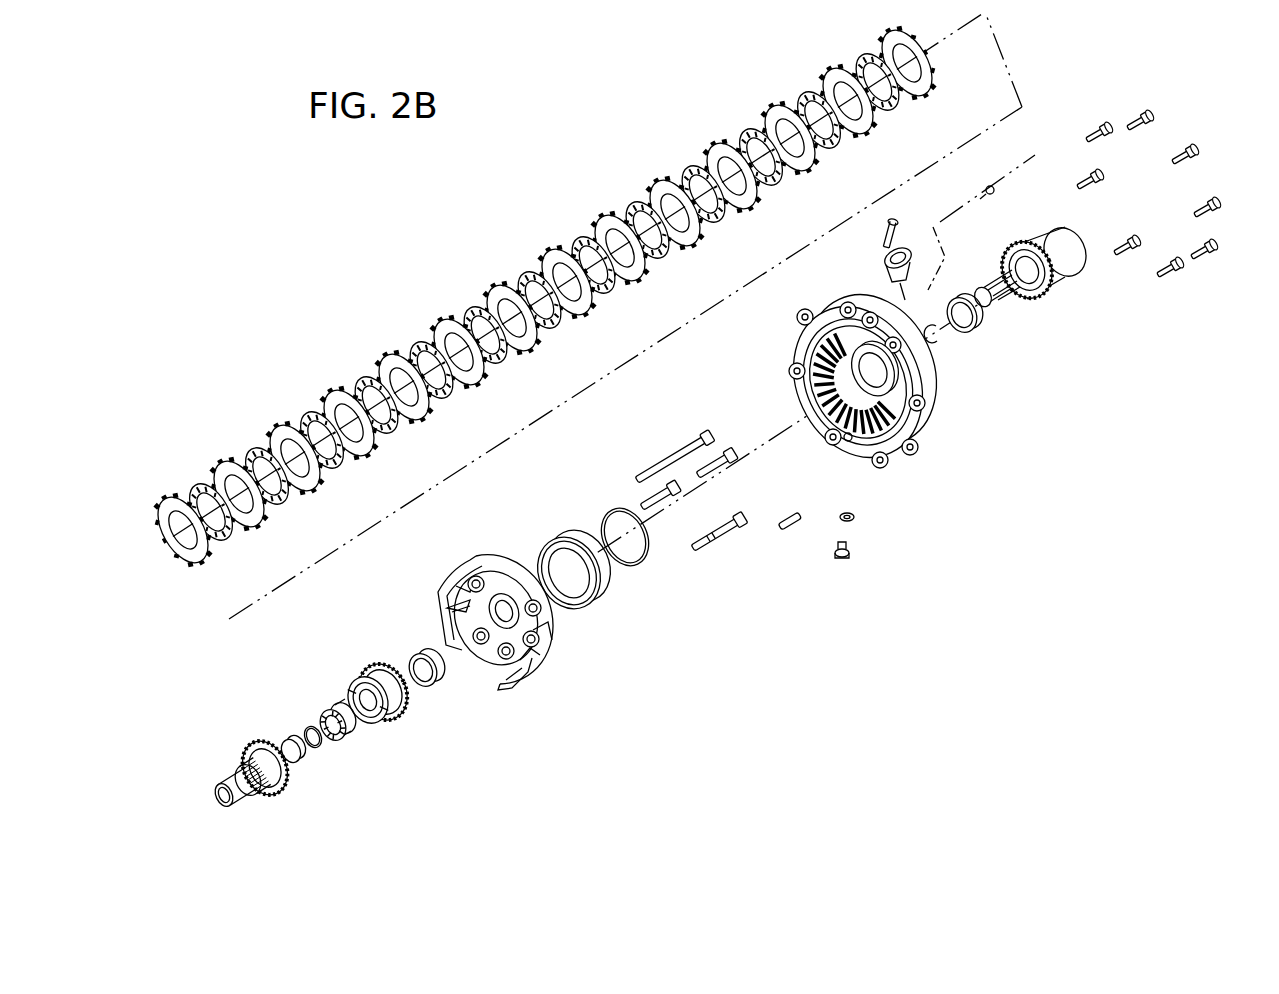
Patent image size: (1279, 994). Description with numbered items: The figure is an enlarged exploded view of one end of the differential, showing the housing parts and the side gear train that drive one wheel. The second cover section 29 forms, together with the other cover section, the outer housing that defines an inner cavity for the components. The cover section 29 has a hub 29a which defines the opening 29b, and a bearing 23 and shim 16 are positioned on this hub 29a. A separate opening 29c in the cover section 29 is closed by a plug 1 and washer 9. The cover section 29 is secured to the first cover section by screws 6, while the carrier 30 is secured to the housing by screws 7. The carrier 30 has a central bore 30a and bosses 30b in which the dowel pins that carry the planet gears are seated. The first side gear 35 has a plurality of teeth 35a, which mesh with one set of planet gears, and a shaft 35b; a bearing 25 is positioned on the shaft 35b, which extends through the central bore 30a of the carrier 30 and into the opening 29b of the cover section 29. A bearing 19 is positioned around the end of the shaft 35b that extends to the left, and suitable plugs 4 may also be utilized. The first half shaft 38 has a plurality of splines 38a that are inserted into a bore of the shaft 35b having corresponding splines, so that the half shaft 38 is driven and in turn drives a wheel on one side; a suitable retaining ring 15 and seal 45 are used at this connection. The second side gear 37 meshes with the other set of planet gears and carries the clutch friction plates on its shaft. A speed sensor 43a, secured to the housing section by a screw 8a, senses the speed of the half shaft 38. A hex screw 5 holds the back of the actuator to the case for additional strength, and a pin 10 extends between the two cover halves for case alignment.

The plug 1 is at (852, 556).
The plugs 4 is at (316, 749).
The hex screw 5 is at (994, 184).
The screws 6 is at (1178, 150).
The screws 7 is at (709, 553).
The screw 8a is at (886, 233).
The washer 9 is at (857, 519).
The pin 10 is at (791, 536).
The retaining ring 15 is at (930, 328).
The shim 16 is at (647, 566).
The bearing 19 is at (347, 740).
The bearing 23 is at (590, 602).
The bearing 25 is at (442, 682).
The second cover section 29 is at (928, 465).
The hub 29a is at (895, 372).
The opening 29b is at (840, 380).
The opening 29c is at (843, 440).
The carrier 30 is at (528, 684).
The central bore 30a is at (505, 594).
The bosses 30b is at (548, 636).
The first side gear 35 is at (398, 722).
The teeth 35a is at (356, 678).
The shaft 35b is at (386, 666).
The second side gear 37 is at (248, 812).
The first half shaft 38 is at (1053, 293).
The splines 38a is at (990, 287).
The speed sensor 43a is at (905, 246).
The seal 45 is at (982, 322).